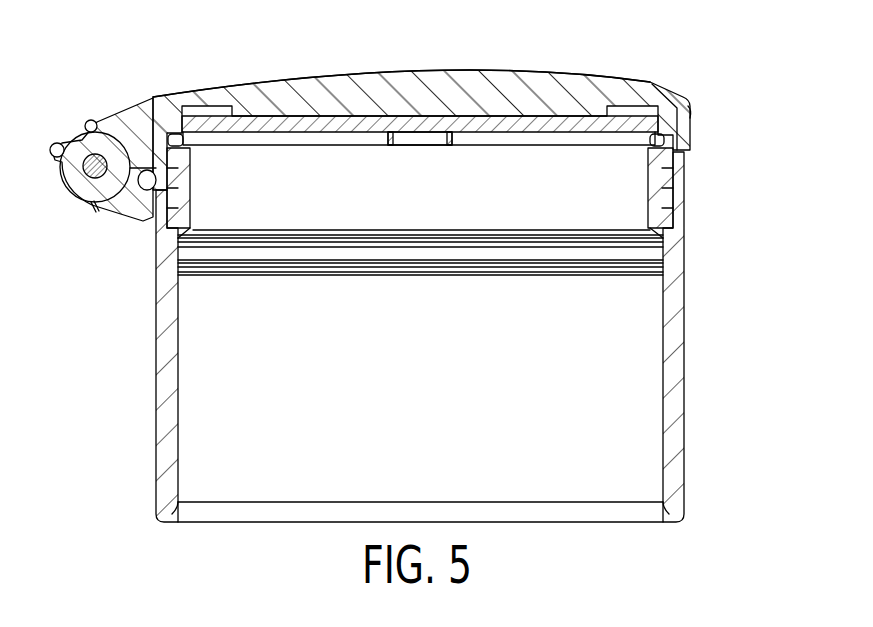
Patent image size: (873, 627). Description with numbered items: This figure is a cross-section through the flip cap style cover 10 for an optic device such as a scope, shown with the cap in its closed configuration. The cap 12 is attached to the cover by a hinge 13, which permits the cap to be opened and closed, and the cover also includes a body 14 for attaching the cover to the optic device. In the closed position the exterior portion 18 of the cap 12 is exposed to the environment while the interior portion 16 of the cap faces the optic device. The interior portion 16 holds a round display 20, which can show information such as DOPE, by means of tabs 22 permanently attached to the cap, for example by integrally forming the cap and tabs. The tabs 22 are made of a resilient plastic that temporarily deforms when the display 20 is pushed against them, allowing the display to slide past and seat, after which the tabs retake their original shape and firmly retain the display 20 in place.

The flip cap style cover 10 is at (700, 31).
The cap 12 is at (582, 95).
The hinge 13 is at (82, 147).
The body 14 is at (686, 343).
The interior portion 16 is at (260, 118).
The exterior portion 18 is at (504, 72).
The display 20 is at (492, 124).
The tabs 22 is at (184, 141).